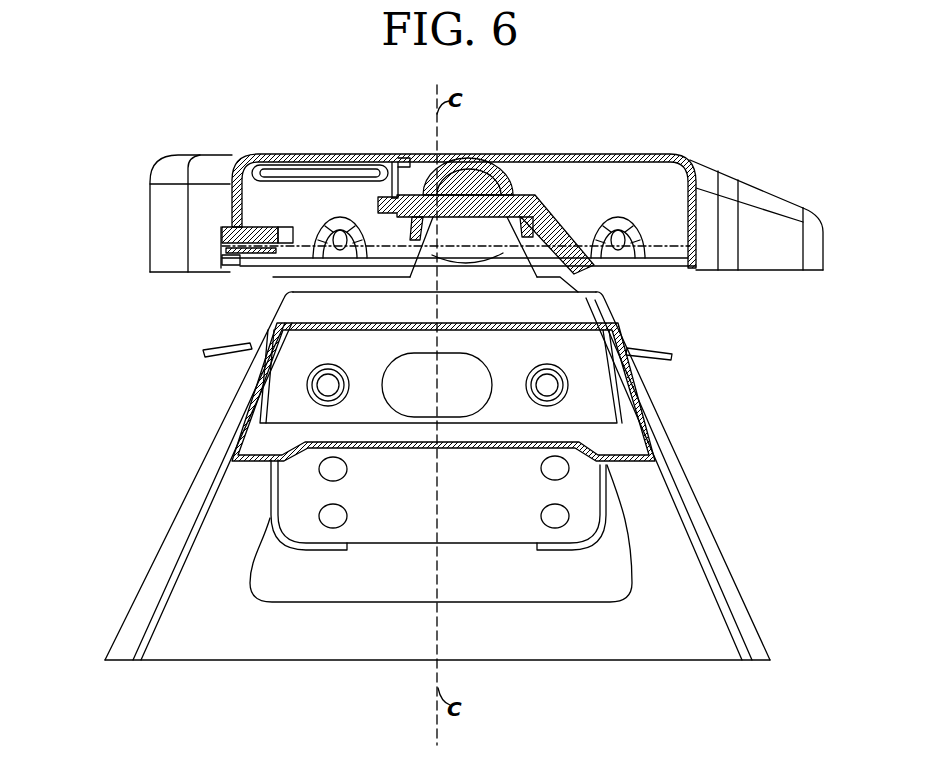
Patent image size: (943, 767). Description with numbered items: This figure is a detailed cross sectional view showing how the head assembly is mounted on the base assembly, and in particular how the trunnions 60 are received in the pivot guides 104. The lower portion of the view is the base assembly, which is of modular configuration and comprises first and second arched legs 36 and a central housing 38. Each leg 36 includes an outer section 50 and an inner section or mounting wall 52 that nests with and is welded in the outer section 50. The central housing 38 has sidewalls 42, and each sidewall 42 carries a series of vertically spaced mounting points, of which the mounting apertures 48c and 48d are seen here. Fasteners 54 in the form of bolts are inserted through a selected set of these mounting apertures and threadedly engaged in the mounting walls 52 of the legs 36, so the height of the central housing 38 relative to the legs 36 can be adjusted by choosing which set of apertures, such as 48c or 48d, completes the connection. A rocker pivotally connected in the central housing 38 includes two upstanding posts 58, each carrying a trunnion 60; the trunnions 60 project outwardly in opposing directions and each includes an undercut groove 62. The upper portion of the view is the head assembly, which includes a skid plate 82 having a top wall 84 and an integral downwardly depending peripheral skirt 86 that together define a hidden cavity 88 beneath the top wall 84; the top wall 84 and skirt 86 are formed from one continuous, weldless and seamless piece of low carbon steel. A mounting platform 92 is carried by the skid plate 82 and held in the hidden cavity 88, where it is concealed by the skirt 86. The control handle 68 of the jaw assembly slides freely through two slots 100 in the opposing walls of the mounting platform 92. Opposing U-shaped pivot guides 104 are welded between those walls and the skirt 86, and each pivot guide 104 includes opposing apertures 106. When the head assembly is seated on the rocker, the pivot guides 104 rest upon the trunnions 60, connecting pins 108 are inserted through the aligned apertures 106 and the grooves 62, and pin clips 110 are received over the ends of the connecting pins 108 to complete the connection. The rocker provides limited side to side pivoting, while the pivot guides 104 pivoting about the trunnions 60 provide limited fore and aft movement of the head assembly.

The arched leg 36 is at (757, 628).
The central housing 38 is at (270, 530).
The sidewall 42 is at (402, 517).
The mounting point 48c is at (541, 469).
The mounting point 48d is at (556, 520).
The outer section 50 is at (296, 312).
The inner section or mounting wall 52 is at (602, 402).
The fastener 54 is at (325, 385).
The upstanding post 58 is at (487, 254).
The trunnion 60 is at (462, 183).
The undercut groove 62 is at (475, 218).
The control handle 68 is at (223, 227).
The skid plate 82 is at (160, 167).
The top wall 84 is at (538, 155).
The peripheral skirt 86 is at (707, 238).
The hidden cavity 88 is at (641, 187).
The mounting platform 92 is at (275, 258).
The slot 100 is at (284, 227).
The pivot guide 104 is at (485, 167).
The aperture 106 is at (412, 237).
The connecting pin 108 is at (558, 215).
The pin clip 110 is at (395, 158).